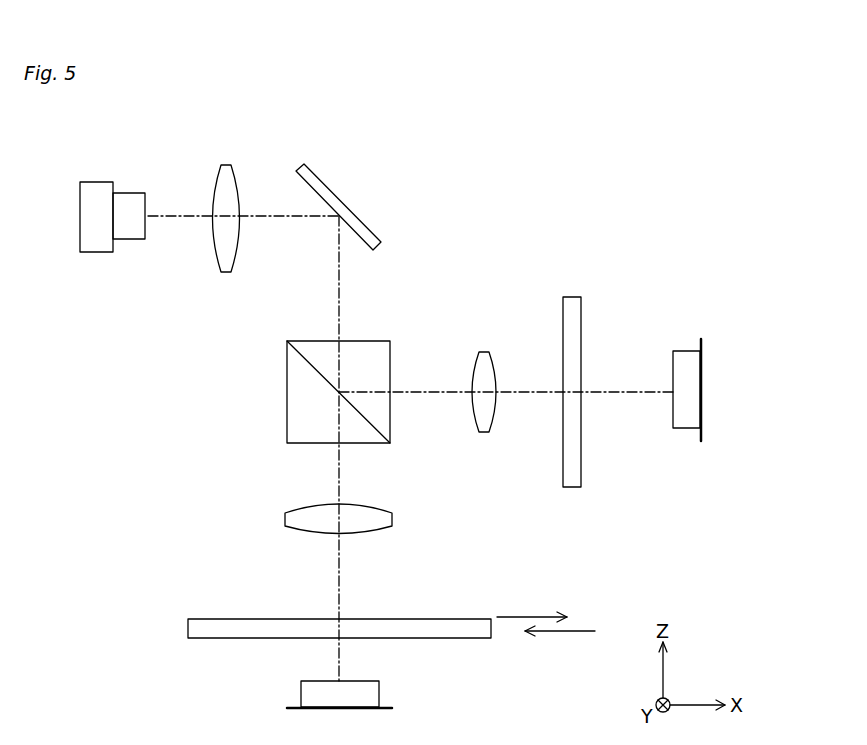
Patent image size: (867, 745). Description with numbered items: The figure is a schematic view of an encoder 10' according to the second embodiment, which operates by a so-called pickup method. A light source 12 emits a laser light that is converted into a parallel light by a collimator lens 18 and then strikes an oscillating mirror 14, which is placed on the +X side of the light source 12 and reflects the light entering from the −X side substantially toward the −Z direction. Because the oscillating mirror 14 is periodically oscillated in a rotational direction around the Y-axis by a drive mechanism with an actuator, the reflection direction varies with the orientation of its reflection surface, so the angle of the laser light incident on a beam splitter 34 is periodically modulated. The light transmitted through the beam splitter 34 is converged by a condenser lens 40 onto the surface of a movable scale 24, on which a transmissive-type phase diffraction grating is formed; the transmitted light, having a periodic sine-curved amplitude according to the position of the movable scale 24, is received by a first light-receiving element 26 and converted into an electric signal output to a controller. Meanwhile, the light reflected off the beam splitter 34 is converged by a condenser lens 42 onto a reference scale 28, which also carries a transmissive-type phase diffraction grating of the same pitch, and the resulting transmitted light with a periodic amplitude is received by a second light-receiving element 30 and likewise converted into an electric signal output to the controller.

The encoder 10' is at (675, 126).
The light source 12 is at (128, 193).
The collimator lens 18 is at (233, 165).
The oscillating mirror 14 is at (361, 217).
The beam splitter 34 is at (382, 340).
The condenser lens 42 is at (485, 352).
The reference scale 28 is at (572, 297).
The second light-receiving element 30 is at (687, 351).
The condenser lens 40 is at (377, 508).
The movable scale 24 is at (445, 619).
The first light-receiving element 26 is at (379, 686).